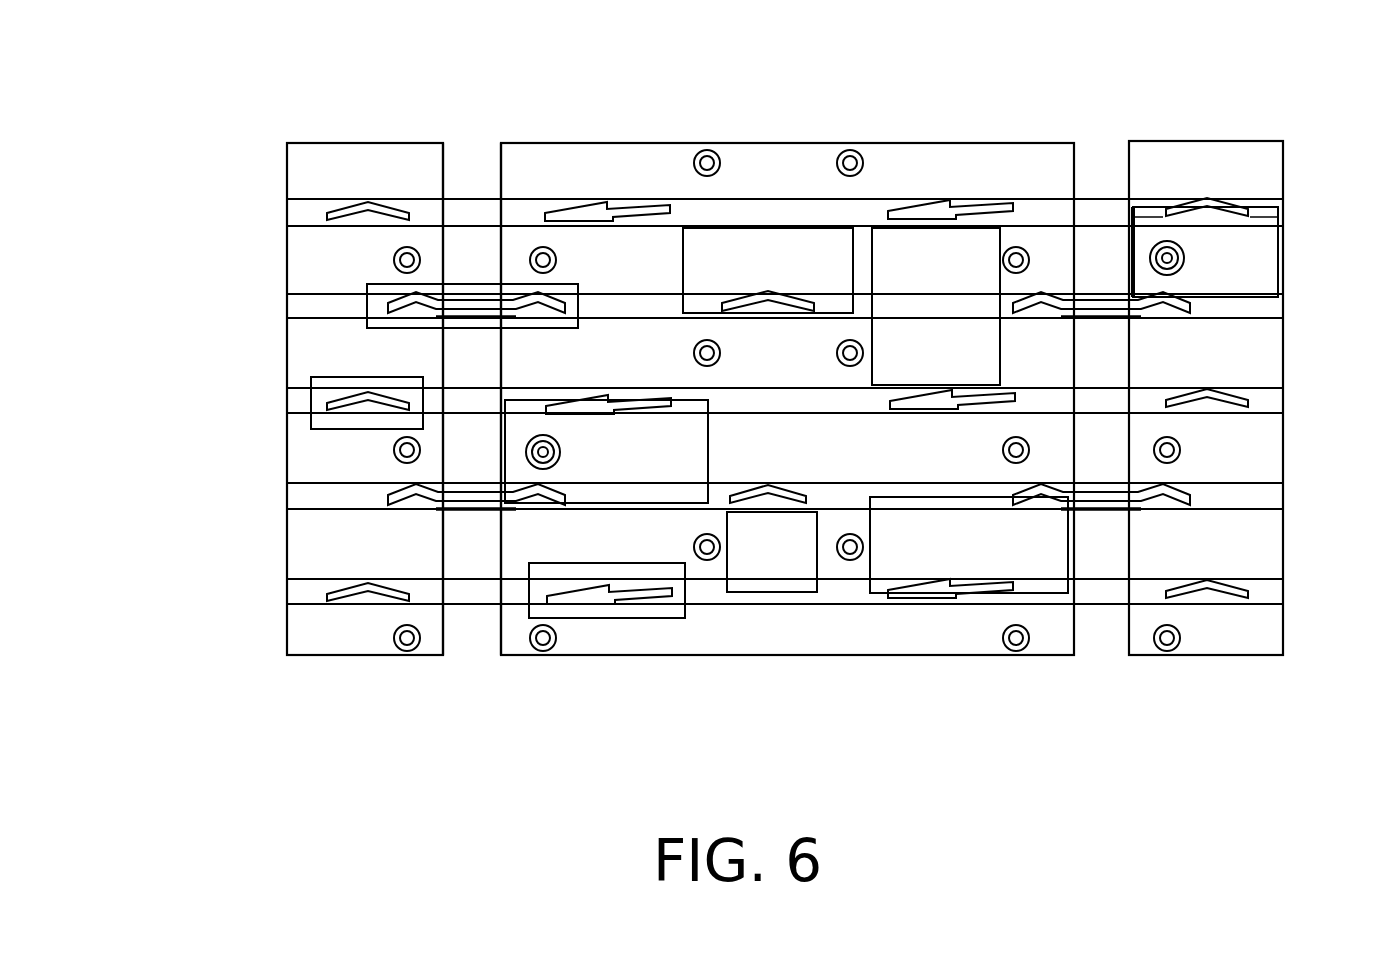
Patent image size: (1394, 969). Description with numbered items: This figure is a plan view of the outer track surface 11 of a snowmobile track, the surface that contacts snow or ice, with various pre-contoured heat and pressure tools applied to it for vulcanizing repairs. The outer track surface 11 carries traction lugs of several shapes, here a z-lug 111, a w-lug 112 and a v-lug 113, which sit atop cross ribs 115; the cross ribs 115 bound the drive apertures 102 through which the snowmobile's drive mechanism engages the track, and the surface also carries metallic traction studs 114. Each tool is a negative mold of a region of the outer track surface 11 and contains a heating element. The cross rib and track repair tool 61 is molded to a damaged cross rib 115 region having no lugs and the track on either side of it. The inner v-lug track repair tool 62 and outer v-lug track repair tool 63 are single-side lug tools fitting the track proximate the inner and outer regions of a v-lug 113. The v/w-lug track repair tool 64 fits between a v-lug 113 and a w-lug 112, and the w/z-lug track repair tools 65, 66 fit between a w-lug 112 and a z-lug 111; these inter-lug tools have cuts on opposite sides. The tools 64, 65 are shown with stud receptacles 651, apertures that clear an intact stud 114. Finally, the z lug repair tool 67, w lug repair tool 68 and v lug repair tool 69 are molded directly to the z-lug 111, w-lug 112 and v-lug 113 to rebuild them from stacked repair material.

The outer track surface 11 is at (820, 55).
The drive apertures 102 is at (475, 545).
The z-lug 111 is at (653, 388).
The w-lug 112 is at (1105, 500).
The v-lug 113 is at (1218, 205).
The traction studs 114 is at (543, 452).
The cross ribs 115 is at (307, 306).
The cross rib and track repair tool 61 is at (953, 282).
The inner v-lug track repair tool 62 is at (790, 567).
The outer v-lug track repair tool 63 is at (795, 282).
The v/w-lug track repair tool 64 is at (1251, 284).
The w/z-lug track repair tool 65 is at (653, 475).
The stud receptacles 651 is at (563, 440).
The w/z-lug track repair tool 66 is at (985, 567).
The z lug repair tool 67 is at (577, 610).
The w lug repair tool 68 is at (518, 287).
The v lug repair tool 69 is at (313, 378).